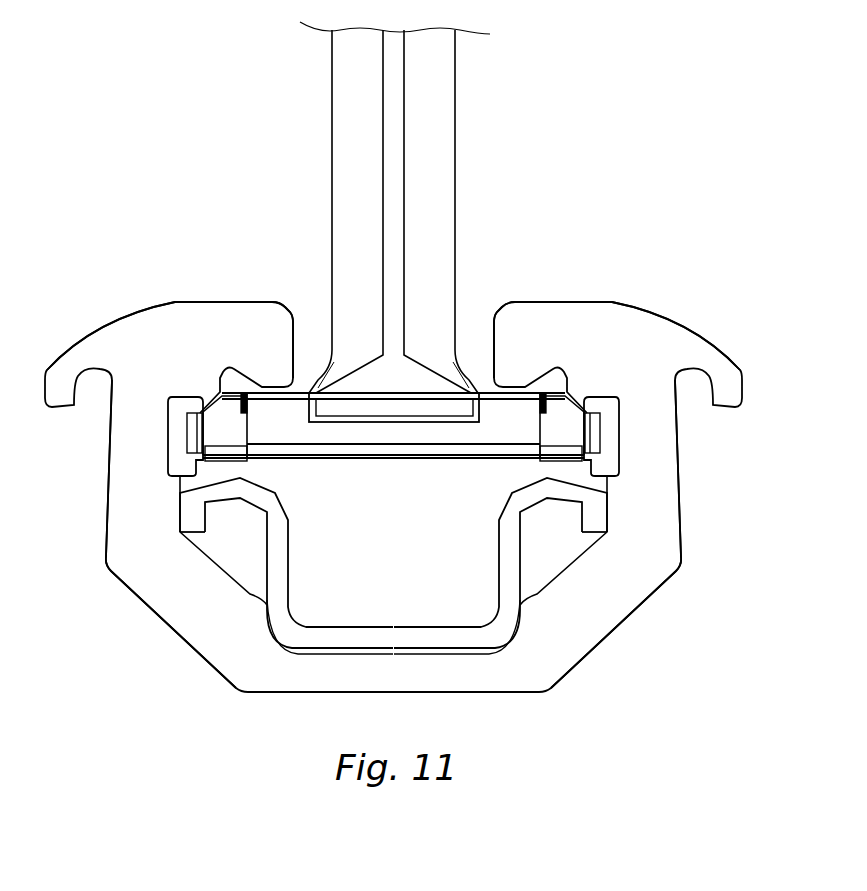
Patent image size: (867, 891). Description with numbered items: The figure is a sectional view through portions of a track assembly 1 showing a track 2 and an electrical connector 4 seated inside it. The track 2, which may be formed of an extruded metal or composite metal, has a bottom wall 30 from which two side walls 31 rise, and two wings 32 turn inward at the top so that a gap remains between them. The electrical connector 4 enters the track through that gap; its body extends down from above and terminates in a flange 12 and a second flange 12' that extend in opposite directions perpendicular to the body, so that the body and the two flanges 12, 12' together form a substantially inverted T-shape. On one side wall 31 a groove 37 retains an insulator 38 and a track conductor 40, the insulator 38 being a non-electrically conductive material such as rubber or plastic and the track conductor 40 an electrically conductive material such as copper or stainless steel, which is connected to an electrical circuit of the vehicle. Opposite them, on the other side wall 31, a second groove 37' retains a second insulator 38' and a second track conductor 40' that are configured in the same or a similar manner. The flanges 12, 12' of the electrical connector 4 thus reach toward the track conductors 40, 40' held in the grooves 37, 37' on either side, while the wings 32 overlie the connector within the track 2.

The track assembly 1 is at (193, 124).
The track 2 is at (682, 306).
The electrical connector 4 is at (469, 135).
The flange 12 is at (286, 610).
The second flange 12' is at (508, 610).
The bottom wall 30 is at (450, 670).
The side wall 31 is at (134, 532).
The wing 32 is at (196, 318).
The groove 37 is at (107, 429).
The second groove 37' is at (684, 429).
The insulator 38 is at (126, 444).
The second insulator 38' is at (666, 444).
The track conductor 40 is at (122, 465).
The second track conductor 40' is at (668, 465).